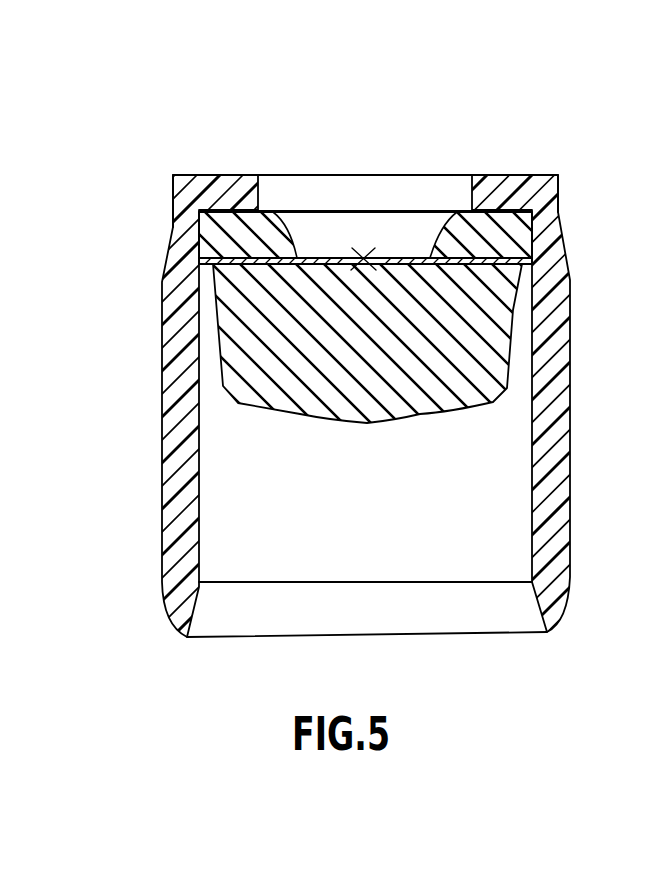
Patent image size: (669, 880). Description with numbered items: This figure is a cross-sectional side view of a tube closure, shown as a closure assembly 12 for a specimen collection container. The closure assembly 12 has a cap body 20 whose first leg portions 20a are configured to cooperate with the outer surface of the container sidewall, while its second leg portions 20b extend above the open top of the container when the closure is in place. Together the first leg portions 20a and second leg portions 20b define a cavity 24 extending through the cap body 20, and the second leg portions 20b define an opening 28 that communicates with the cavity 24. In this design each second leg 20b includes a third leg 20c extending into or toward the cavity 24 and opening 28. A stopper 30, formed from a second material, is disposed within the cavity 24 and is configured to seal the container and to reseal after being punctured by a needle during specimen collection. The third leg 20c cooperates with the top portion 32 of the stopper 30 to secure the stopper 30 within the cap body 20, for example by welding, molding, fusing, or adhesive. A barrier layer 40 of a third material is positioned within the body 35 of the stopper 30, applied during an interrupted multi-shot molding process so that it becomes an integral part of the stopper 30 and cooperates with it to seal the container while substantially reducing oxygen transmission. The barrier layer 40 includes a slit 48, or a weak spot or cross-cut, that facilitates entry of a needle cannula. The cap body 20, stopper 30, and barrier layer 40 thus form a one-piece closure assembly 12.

The closure assembly 12 is at (102, 186).
The cap body 20 is at (562, 385).
The first leg portions 20a is at (162, 465).
The second leg portions 20b is at (180, 205).
The third leg 20c is at (230, 174).
The cavity 24 is at (369, 112).
The opening 28 is at (375, 206).
The stopper 30 is at (498, 310).
The top portion 32 is at (510, 232).
The body 35 is at (498, 282).
The barrier layer 40 is at (326, 258).
The slit 48 is at (362, 257).